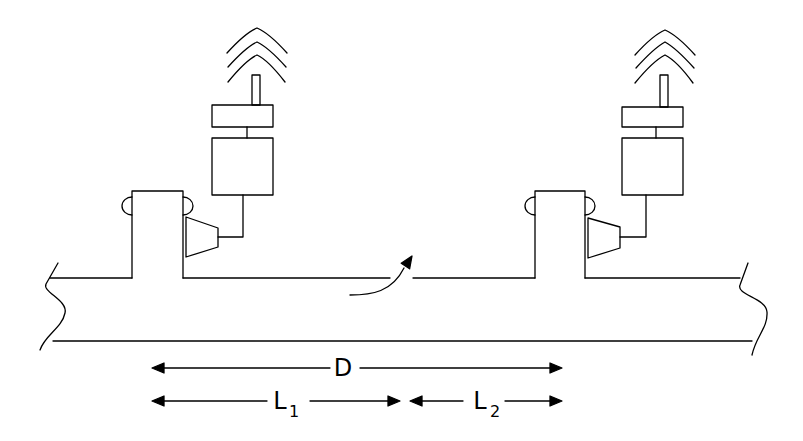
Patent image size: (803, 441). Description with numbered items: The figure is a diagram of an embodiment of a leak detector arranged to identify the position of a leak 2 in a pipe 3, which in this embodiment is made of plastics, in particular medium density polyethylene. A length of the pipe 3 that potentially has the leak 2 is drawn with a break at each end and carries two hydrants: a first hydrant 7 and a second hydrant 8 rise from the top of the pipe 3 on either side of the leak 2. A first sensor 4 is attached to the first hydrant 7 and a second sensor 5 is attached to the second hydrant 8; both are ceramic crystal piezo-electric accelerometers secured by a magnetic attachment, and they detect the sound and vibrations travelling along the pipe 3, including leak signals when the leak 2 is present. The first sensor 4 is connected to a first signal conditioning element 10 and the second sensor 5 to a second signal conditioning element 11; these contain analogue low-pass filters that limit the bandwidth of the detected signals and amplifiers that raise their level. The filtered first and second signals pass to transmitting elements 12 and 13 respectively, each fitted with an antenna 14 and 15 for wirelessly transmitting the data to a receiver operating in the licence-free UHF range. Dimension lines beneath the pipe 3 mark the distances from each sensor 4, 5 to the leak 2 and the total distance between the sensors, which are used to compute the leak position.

The leak 2 is at (403, 272).
The pipe 3 is at (90, 290).
The first sensor 4 is at (197, 238).
The second sensor 5 is at (600, 239).
The first hydrant 7 is at (145, 243).
The second hydrant 8 is at (548, 245).
The first signal conditioning element 10 is at (228, 181).
The second signal conditioning element 11 is at (632, 187).
The transmitting element 12 is at (215, 120).
The transmitting element 13 is at (622, 118).
The antenna 14 is at (260, 92).
The antenna 15 is at (668, 92).